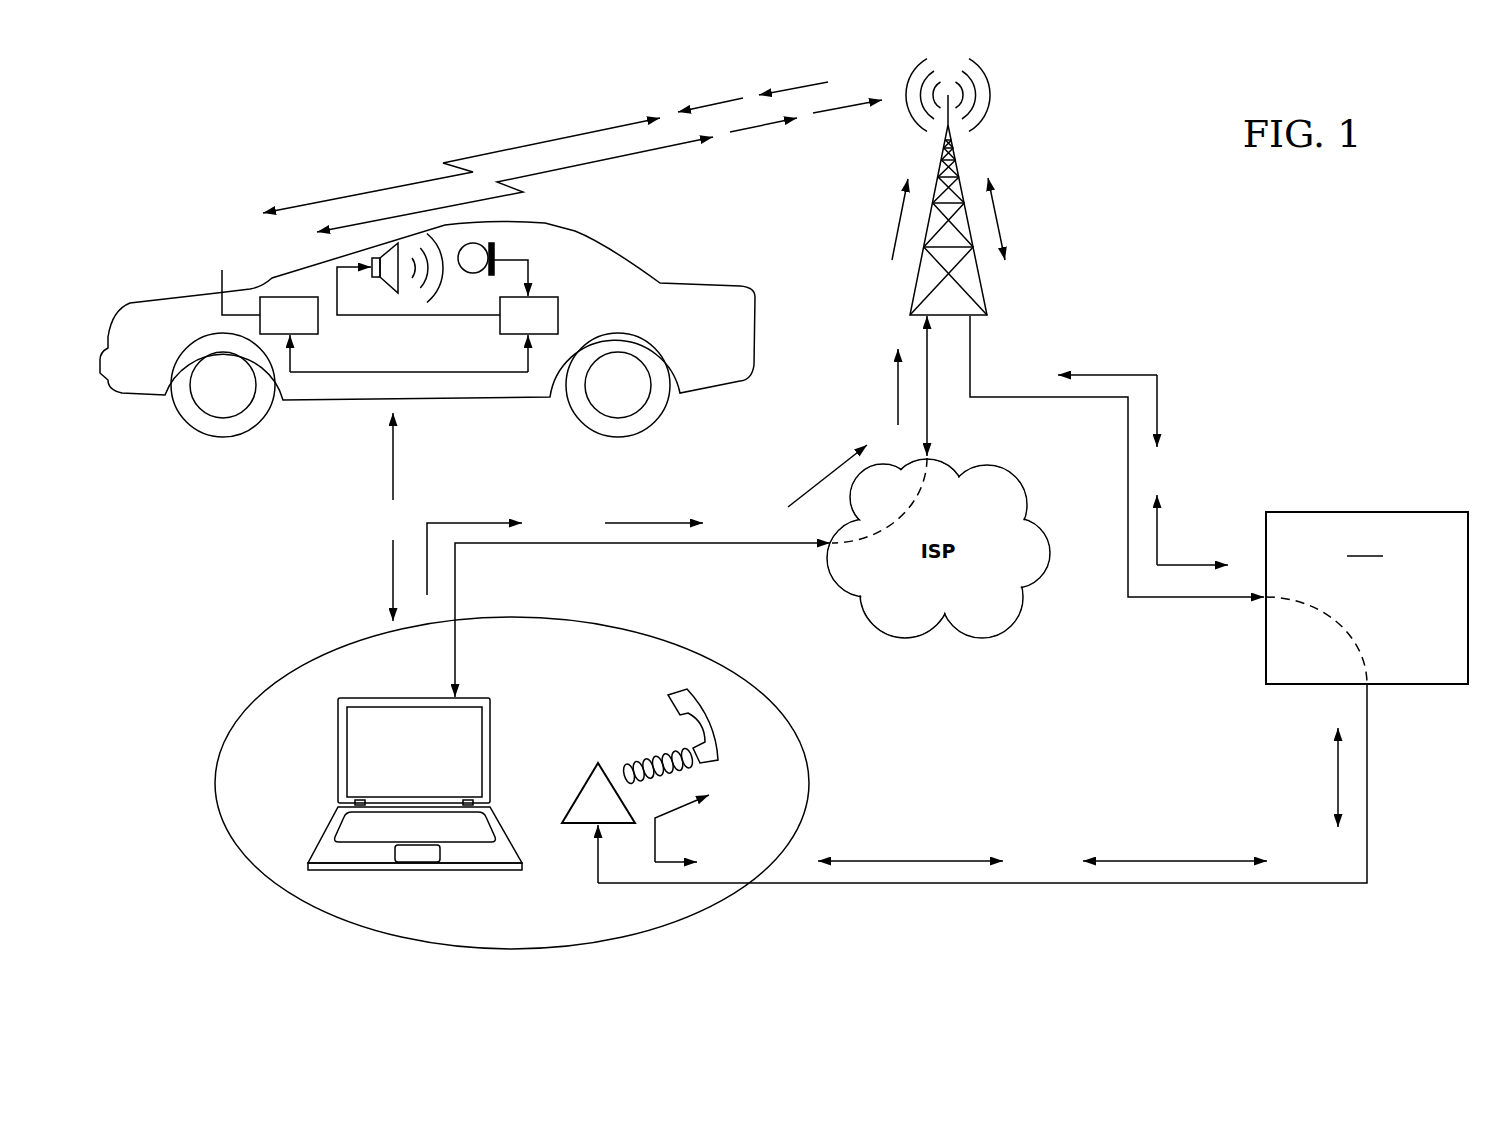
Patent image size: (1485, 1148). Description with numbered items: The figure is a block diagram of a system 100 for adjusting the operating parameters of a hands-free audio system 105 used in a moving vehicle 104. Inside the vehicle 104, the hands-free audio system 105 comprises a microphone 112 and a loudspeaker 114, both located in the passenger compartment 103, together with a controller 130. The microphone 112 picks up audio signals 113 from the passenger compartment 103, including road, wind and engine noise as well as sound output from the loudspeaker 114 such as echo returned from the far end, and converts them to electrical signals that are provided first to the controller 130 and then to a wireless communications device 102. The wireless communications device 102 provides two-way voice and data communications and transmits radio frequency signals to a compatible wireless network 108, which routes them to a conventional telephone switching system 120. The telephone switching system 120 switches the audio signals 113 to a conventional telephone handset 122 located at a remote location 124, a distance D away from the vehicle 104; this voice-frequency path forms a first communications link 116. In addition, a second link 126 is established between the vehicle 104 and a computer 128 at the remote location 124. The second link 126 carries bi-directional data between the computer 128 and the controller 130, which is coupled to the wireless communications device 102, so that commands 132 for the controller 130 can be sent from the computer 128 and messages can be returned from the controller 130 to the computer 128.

The system 100 is at (1275, 245).
The wireless communications device 102 is at (282, 297).
The passenger compartment 103 is at (472, 238).
The vehicle 104 is at (195, 292).
The hands-free audio system 105 is at (188, 470).
The wireless network 108 is at (985, 306).
The microphone 112 is at (496, 250).
The audio signals 113 is at (437, 287).
The loudspeaker 114 is at (388, 294).
The first communications link 116 is at (667, 149).
The telephone switching system 120 is at (1367, 598).
The telephone handset 122 is at (580, 790).
The remote location 124 is at (262, 872).
The second link 126 is at (405, 186).
The computer 128 is at (337, 752).
The controller 130 is at (558, 316).
The commands 132 is at (712, 104).